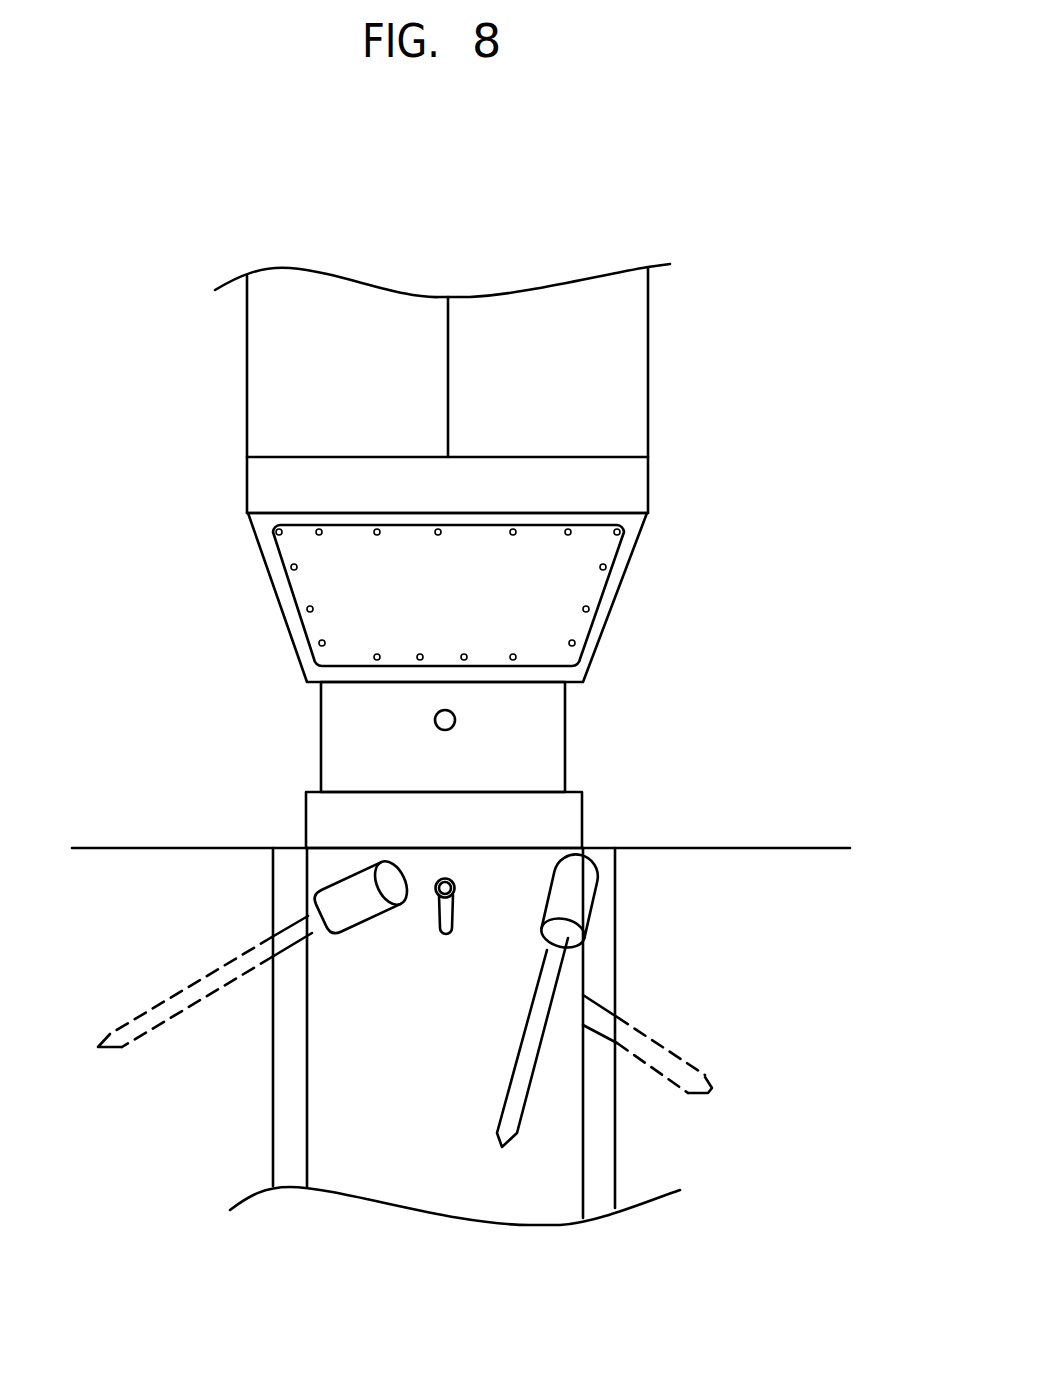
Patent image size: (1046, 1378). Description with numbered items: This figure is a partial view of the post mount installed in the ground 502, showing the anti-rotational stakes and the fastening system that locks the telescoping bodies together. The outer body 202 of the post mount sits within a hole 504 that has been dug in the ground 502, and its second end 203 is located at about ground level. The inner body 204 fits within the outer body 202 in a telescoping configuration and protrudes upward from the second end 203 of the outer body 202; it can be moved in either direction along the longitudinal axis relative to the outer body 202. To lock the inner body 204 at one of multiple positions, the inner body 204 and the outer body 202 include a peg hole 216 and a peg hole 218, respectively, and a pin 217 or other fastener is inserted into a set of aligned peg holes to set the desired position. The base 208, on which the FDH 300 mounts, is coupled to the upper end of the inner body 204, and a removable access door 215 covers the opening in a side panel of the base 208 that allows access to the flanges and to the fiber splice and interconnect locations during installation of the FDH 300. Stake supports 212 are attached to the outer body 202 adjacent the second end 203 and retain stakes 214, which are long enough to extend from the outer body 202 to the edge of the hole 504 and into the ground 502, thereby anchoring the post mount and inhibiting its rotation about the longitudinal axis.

The FDH 300 is at (648, 380).
The base 208 is at (633, 523).
The removable access door 215 is at (563, 587).
The inner body 204 is at (540, 718).
The peg hole 216 is at (437, 725).
The second end 203 is at (583, 793).
The ground 502 is at (143, 845).
The hole 504 is at (275, 1112).
The outer body 202 is at (505, 1197).
The stake support 212 is at (582, 895).
The stake 214 is at (525, 1062).
The pin 217 is at (446, 934).
The peg hole 218 is at (453, 883).